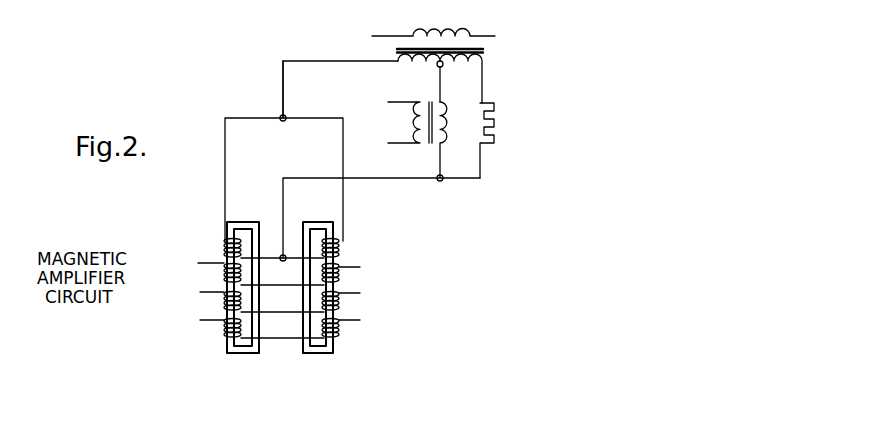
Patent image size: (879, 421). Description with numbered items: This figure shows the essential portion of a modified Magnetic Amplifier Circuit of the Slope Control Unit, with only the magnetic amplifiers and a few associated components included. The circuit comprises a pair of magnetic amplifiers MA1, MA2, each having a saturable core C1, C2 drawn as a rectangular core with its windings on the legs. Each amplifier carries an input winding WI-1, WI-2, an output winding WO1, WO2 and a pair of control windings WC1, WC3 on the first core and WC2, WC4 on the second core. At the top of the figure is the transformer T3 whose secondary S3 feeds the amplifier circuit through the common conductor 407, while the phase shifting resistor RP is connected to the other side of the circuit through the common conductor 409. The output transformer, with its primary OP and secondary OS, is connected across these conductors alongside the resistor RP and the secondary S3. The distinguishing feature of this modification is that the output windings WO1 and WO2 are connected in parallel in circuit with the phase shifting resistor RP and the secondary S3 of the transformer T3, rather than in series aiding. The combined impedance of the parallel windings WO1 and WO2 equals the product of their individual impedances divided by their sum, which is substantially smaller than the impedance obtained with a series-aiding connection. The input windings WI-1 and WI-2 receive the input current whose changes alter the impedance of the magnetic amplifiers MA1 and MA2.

The transformer T3 is at (483, 50).
The secondary S3 is at (453, 81).
The output transformer secondary winding OS is at (419, 115).
The output transformer primary winding OP is at (443, 128).
The phase shifting resistor RP is at (494, 121).
The common conductor 407 is at (282, 76).
The common conductor 409 is at (457, 180).
The saturable core C1 is at (245, 222).
The saturable core C2 is at (318, 214).
The output winding WO1 is at (224, 246).
The output winding WO2 is at (340, 247).
The input winding WI-1 is at (224, 273).
The input winding WI-2 is at (340, 285).
The control winding WC1 is at (224, 299).
The control winding WC2 is at (340, 307).
The control winding WC3 is at (224, 327).
The control winding WC4 is at (340, 334).
The magnetic amplifier MA1 is at (252, 383).
The magnetic amplifier MA2 is at (332, 383).